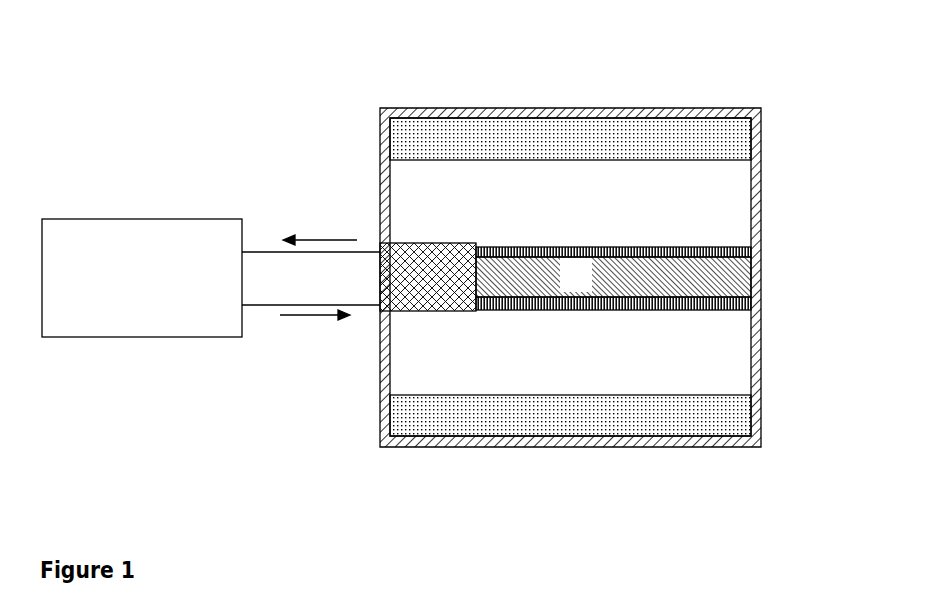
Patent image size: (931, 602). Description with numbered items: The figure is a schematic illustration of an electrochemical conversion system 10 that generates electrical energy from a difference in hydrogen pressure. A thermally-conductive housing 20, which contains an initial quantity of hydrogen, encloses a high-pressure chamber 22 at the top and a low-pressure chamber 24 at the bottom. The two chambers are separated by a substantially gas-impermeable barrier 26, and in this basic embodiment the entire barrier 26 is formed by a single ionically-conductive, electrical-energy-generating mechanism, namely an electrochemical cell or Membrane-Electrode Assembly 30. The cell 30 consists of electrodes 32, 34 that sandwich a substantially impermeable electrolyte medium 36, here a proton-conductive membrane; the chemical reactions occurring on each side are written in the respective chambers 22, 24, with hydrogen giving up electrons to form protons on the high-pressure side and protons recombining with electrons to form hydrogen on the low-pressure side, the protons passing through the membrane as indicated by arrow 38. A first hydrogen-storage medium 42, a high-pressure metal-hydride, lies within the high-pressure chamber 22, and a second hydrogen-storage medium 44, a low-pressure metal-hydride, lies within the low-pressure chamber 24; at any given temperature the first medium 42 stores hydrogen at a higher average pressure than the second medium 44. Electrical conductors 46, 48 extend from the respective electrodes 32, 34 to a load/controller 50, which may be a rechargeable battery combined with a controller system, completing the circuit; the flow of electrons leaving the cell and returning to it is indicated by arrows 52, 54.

The electrochemical conversion system 10 is at (555, 36).
The thermally-conductive housing 20 is at (653, 108).
The high-pressure chamber 22 is at (731, 178).
The low-pressure chamber 24 is at (737, 352).
The substantially gas-impermeable barrier 26 is at (480, 309).
The electrochemical cell (Membrane-Electrode Assembly) 30 is at (677, 279).
The electrode 32 is at (752, 253).
The electrode 34 is at (647, 312).
The electrolyte medium 36 is at (740, 279).
The proton transport direction 38 is at (539, 289).
The first hydrogen-storage medium 42 is at (538, 137).
The second hydrogen-storage medium 44 is at (602, 421).
The electrical conductor 46 is at (253, 250).
The electrical conductor 48 is at (253, 306).
The load/controller 50 is at (136, 215).
The electron flow from anode 52 is at (305, 235).
The electron flow to cathode 54 is at (327, 332).